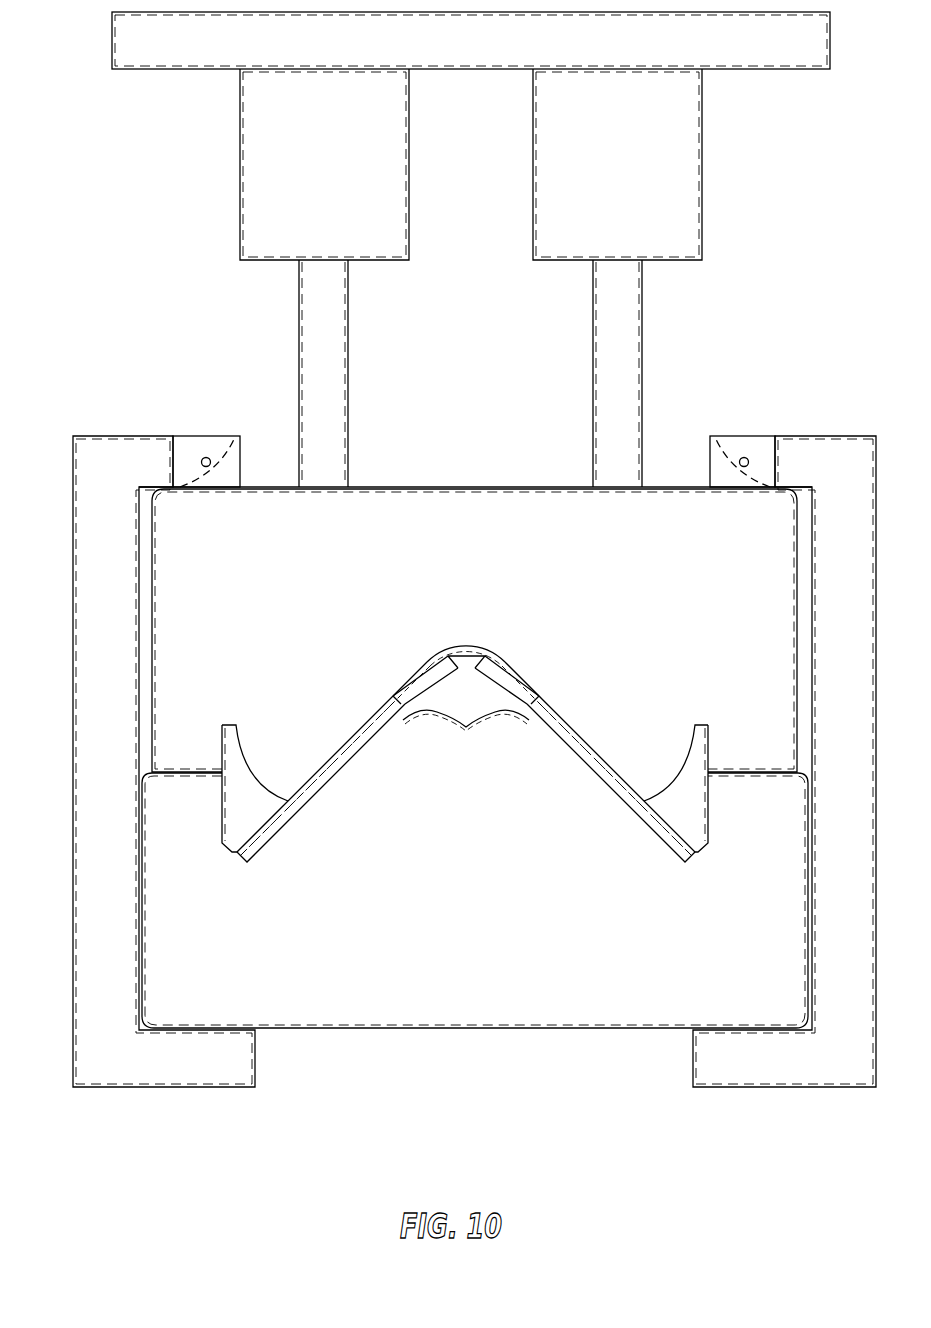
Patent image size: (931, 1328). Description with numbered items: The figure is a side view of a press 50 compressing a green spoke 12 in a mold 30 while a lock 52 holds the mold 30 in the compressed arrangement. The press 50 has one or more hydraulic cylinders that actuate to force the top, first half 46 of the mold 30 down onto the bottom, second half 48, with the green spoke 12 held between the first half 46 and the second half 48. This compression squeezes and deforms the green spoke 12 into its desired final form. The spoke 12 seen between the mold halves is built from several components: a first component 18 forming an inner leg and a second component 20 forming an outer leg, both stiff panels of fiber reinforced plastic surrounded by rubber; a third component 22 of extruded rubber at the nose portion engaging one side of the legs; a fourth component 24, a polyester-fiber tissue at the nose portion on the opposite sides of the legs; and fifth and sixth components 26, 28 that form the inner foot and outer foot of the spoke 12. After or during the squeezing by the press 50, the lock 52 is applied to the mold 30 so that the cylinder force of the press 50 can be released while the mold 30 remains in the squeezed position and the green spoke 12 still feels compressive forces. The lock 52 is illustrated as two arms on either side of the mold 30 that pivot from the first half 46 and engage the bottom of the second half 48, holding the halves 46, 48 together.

The spoke 12 is at (483, 715).
The first component 18 is at (635, 803).
The second component 20 is at (297, 803).
The third component 22 is at (443, 710).
The fourth component 24 is at (478, 652).
The fifth component 26 is at (688, 765).
The sixth component 28 is at (238, 762).
The mold 30 is at (787, 660).
The first half 46 is at (770, 603).
The second half 48 is at (585, 1013).
The press 50 is at (685, 163).
The lock 52 is at (92, 623).